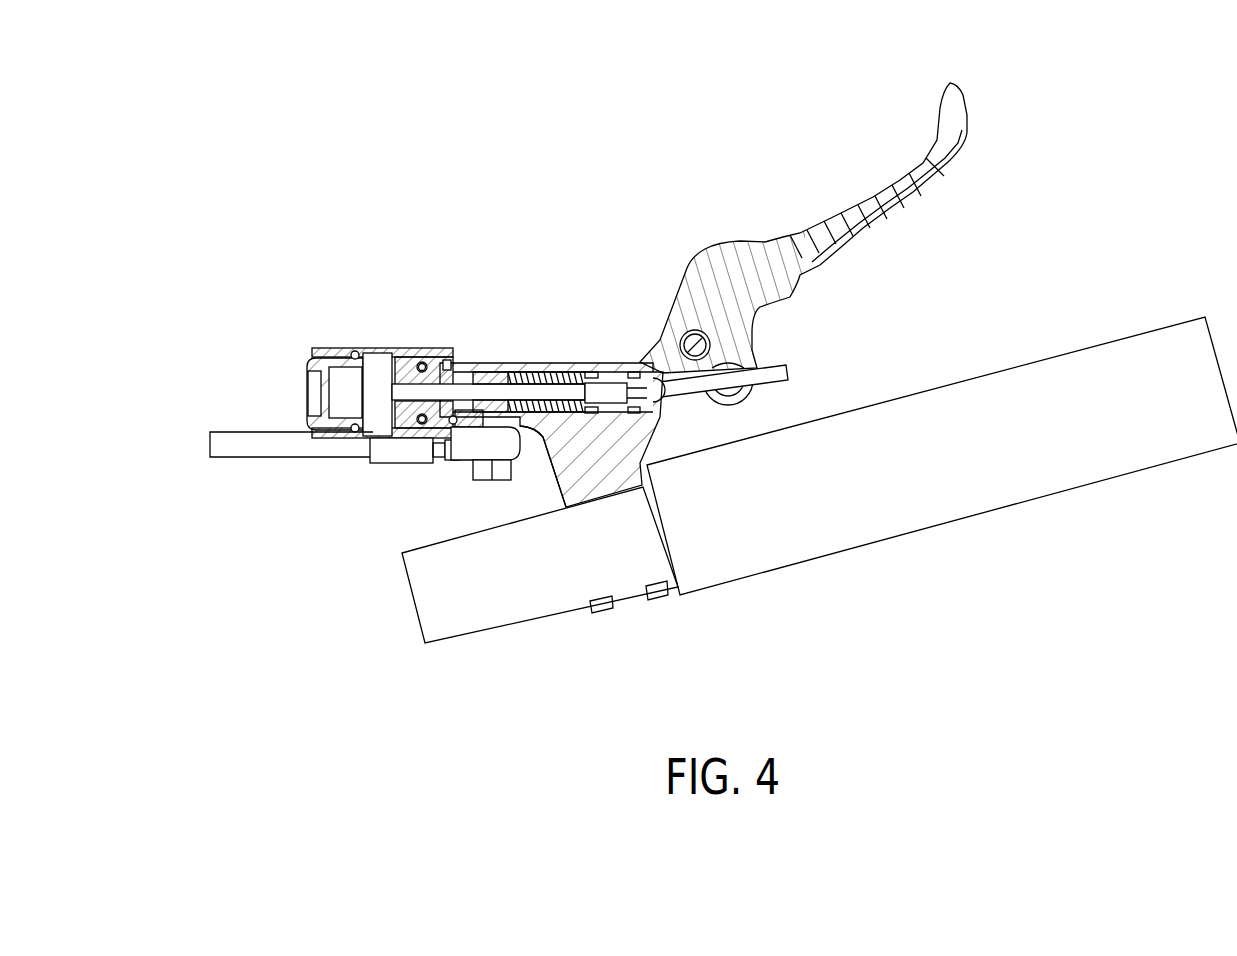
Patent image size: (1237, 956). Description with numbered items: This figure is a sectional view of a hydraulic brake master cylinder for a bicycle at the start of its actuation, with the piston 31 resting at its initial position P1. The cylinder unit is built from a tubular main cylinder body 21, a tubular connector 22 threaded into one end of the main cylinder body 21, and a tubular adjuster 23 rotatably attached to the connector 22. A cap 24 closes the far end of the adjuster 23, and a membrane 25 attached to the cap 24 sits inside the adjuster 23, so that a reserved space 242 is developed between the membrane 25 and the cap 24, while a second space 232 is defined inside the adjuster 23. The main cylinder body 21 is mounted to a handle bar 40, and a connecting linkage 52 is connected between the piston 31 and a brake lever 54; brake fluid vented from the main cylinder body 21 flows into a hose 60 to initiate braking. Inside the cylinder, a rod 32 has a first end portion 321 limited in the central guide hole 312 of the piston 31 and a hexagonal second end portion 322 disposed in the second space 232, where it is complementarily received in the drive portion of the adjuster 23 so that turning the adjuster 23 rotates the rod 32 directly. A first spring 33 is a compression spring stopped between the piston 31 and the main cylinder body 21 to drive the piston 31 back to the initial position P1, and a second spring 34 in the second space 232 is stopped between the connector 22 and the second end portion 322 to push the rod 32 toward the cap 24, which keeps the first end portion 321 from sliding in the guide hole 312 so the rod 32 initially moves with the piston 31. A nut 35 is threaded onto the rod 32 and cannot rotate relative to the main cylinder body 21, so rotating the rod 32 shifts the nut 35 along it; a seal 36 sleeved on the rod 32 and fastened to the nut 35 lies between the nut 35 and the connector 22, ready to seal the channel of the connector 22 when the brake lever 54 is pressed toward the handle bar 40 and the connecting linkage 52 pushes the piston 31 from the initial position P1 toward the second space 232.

The main cylinder body 21 is at (612, 480).
The connector 22 is at (437, 350).
The adjuster 23 is at (367, 438).
The cap 24 is at (310, 363).
The membrane 25 is at (312, 404).
The piston 31 is at (605, 393).
The rod 32 is at (463, 350).
The first spring 33 is at (546, 374).
The second spring 34 is at (435, 448).
The nut 35 is at (505, 460).
The seal 36 is at (500, 412).
The handle bar 40 is at (998, 525).
The connecting linkage 52 is at (791, 371).
The brake lever 54 is at (755, 243).
The hose 60 is at (230, 430).
The second space 232 is at (380, 385).
The reserved space 242 is at (345, 378).
The guide hole 312 is at (586, 430).
The first end portion 321 is at (537, 440).
The second end portion 322 is at (410, 350).
The initial position P1 is at (625, 352).